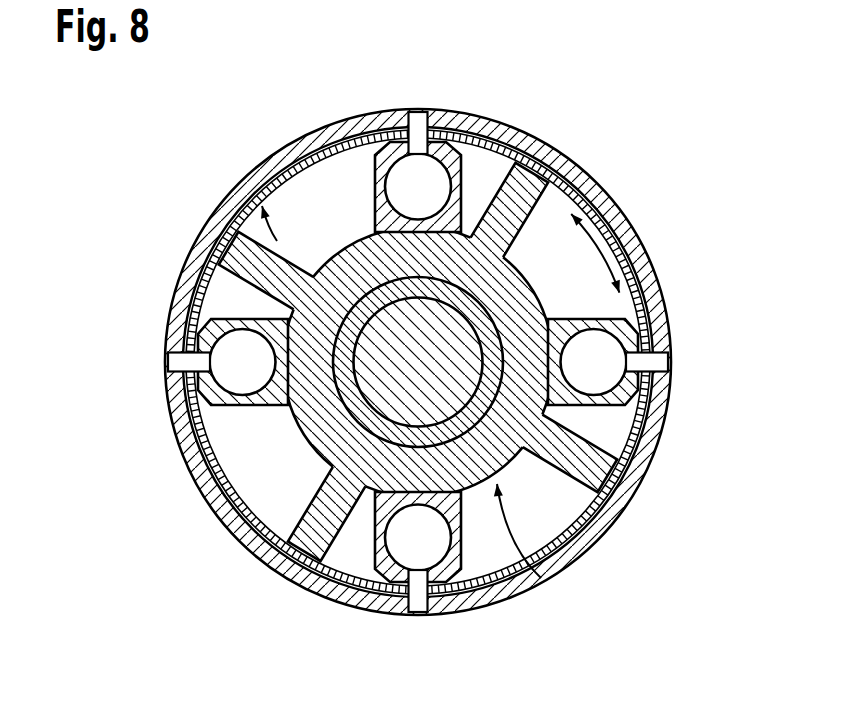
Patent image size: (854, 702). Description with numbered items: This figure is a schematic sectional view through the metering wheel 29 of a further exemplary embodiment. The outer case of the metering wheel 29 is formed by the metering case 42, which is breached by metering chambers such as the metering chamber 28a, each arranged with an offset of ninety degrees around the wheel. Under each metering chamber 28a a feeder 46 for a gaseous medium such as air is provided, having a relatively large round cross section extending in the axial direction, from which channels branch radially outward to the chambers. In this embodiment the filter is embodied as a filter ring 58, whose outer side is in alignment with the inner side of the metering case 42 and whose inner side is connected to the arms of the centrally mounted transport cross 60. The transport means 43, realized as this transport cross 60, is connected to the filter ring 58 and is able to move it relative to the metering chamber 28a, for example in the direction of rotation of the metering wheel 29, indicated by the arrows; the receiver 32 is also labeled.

The metering case 42 is at (528, 147).
The filter ring 58 is at (623, 233).
The transport cross 60 is at (598, 465).
The feeder 46 is at (387, 155).
The metering chamber 28a is at (418, 118).
The receiver 32 is at (275, 242).
The transport means 43 is at (541, 578).
The metering wheel 29 is at (242, 473).